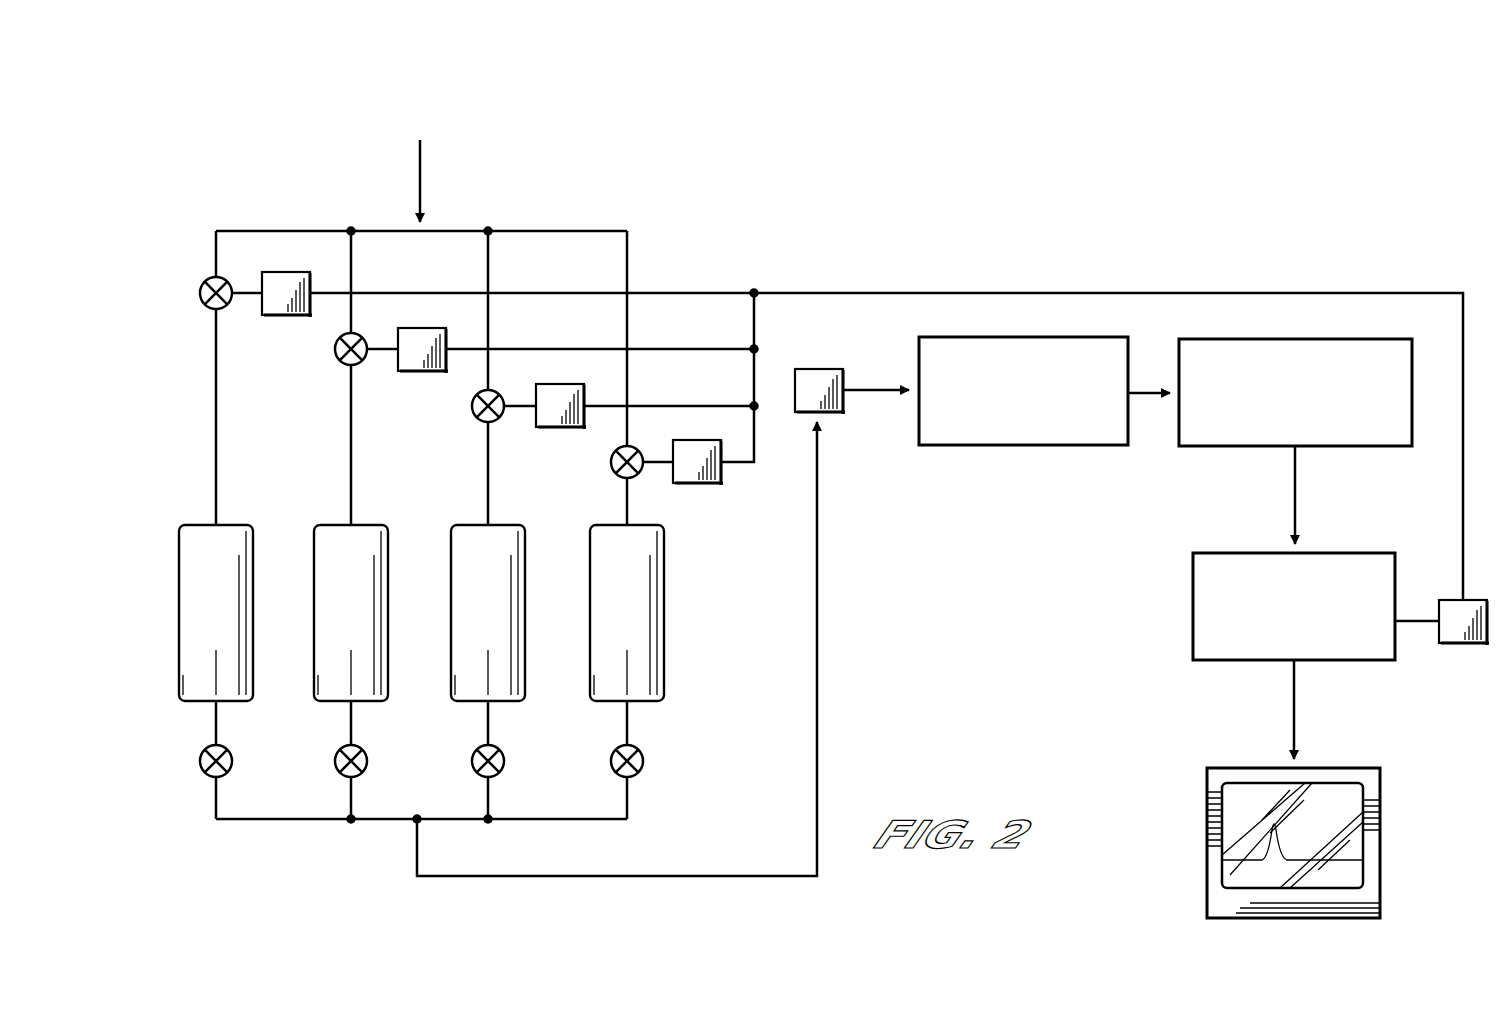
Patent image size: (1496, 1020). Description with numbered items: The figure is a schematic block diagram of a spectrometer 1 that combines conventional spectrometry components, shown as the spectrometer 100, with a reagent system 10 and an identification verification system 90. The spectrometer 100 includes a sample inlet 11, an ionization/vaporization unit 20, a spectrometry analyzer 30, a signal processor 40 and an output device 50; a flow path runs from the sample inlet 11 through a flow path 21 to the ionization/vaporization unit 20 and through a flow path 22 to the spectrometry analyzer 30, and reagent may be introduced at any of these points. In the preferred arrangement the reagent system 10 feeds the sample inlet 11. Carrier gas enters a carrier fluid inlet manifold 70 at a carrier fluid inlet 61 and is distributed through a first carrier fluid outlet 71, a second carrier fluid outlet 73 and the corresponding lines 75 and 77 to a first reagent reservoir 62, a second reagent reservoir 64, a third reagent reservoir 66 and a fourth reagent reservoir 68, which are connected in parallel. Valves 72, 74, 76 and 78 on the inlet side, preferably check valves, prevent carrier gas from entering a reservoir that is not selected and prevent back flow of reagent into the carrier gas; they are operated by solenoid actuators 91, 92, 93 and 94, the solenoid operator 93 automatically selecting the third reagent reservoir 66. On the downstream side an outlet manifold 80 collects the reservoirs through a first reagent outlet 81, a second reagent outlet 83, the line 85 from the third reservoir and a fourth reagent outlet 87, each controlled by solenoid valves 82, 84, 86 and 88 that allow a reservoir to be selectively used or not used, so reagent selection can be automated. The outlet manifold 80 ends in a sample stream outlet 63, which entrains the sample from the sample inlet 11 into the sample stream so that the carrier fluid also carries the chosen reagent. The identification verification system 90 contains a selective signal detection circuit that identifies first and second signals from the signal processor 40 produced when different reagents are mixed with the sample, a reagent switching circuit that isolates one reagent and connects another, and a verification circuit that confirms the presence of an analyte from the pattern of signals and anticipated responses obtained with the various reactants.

The spectrometer 1 is at (1110, 188).
The reagent system 10 is at (625, 180).
The sample inlet 11 is at (818, 369).
The ionization/vaporization unit 20 is at (1020, 445).
The flow path 21 is at (878, 395).
The flow path 22 is at (1148, 395).
The spectrometry analyzer 30 is at (1358, 447).
The signal processor 40 is at (1193, 608).
The output device 50 is at (1380, 822).
The carrier fluid inlet 61 is at (418, 185).
The first reagent reservoir 62 is at (220, 599).
The sample stream outlet 63 is at (596, 876).
The second reagent reservoir 64 is at (355, 599).
The third reagent reservoir 66 is at (492, 599).
The fourth reagent reservoir 68 is at (631, 599).
The carrier fluid inlet manifold 70 is at (256, 222).
The first carrier fluid outlet 71 is at (216, 445).
The valve 72 is at (200, 293).
The second carrier fluid outlet 73 is at (351, 490).
The valve 74 is at (335, 349).
The inlet line 75 is at (488, 493).
The valve 76 is at (472, 406).
The inlet line 77 is at (627, 500).
The valve 78 is at (611, 462).
The outlet manifold 80 is at (286, 828).
The first reagent outlet 81 is at (216, 730).
The valve 82 is at (199, 761).
The second reagent outlet 83 is at (351, 730).
The valve 84 is at (334, 761).
The outlet line 85 is at (488, 728).
The valve 86 is at (471, 761).
The fourth reagent outlet 87 is at (627, 728).
The valve 88 is at (643, 762).
The identification verification system 90 is at (1460, 644).
The solenoid actuator 91 is at (285, 272).
The solenoid actuator 92 is at (420, 371).
The solenoid actuator 93 is at (560, 384).
The solenoid actuator 94 is at (700, 483).
The spectrometer 100 is at (1025, 678).